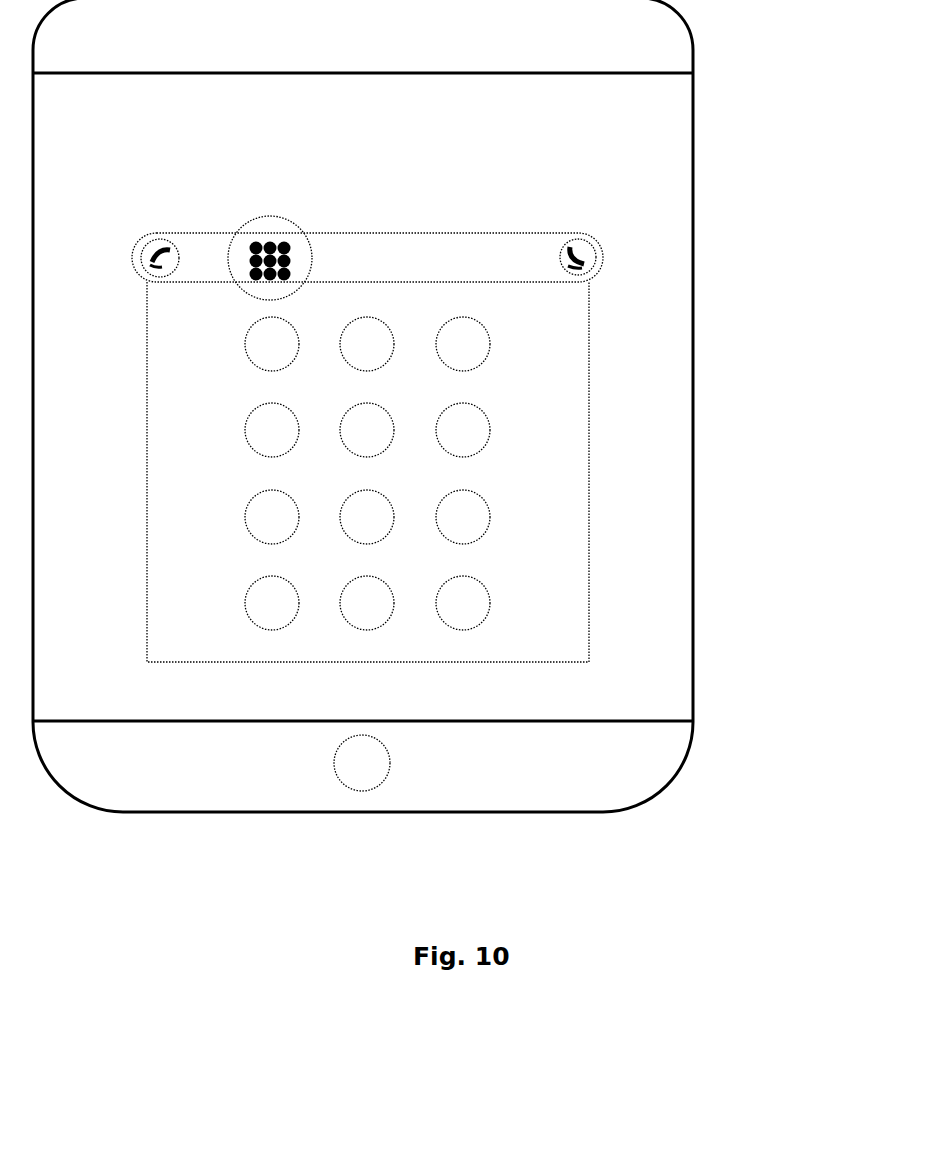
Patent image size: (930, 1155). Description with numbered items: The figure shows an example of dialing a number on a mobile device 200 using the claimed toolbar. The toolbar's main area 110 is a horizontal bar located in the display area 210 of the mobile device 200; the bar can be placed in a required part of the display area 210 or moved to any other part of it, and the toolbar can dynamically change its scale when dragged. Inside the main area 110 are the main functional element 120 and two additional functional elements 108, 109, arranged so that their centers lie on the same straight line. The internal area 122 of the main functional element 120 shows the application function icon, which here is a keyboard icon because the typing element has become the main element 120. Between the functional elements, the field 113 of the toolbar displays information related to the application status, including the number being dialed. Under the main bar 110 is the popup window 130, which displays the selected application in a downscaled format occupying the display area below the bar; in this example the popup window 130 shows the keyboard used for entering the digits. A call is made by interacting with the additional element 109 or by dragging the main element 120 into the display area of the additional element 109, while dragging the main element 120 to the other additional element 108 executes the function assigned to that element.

The additional functional element 108 is at (162, 240).
The additional functional element 109 is at (582, 243).
The main area 110 is at (472, 235).
The field 113 is at (368, 252).
The main functional element 120 is at (265, 220).
The internal area 122 is at (280, 242).
The popup window 130 is at (560, 385).
The mobile device 200 is at (693, 230).
The display area 210 is at (663, 622).